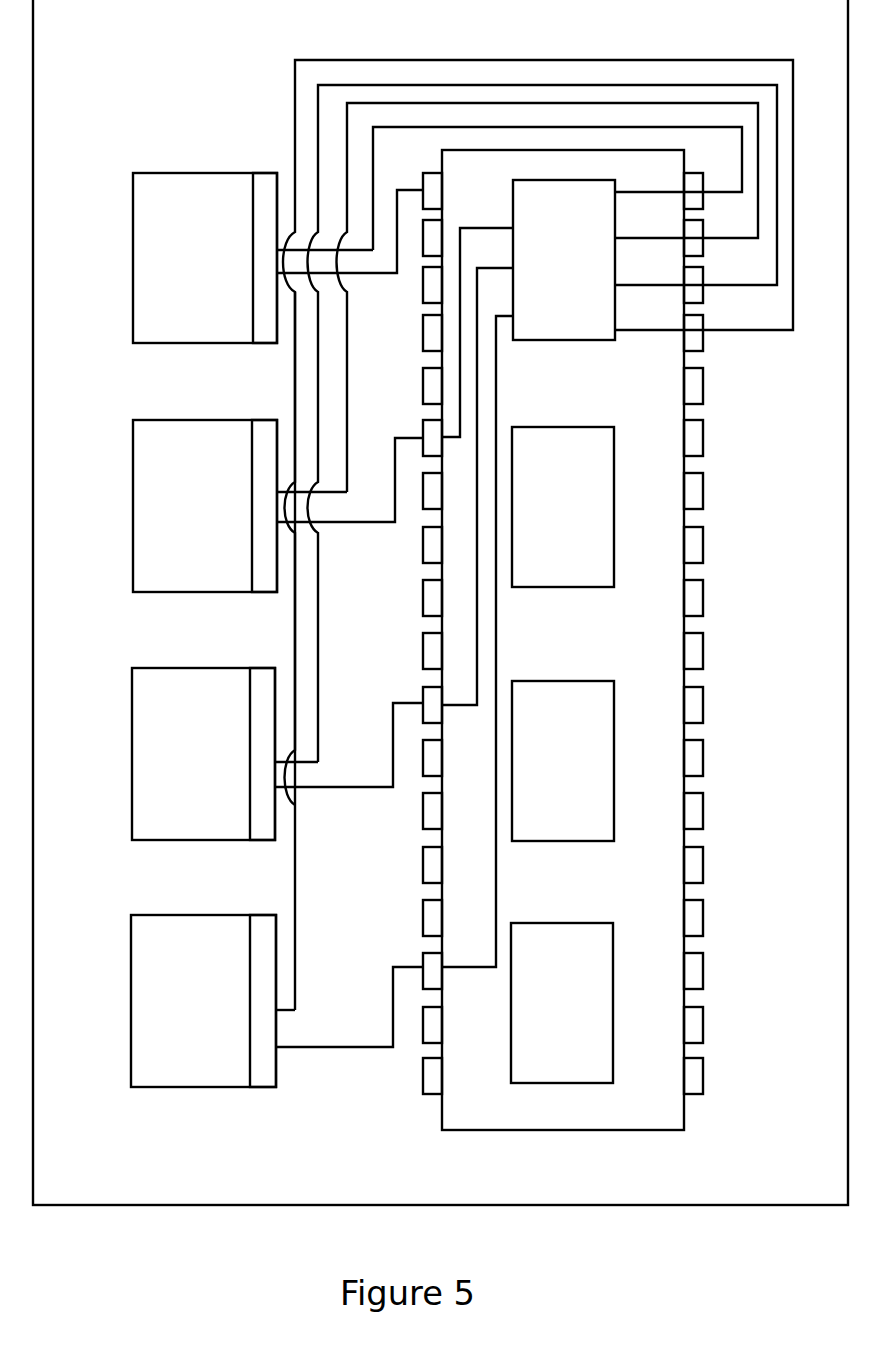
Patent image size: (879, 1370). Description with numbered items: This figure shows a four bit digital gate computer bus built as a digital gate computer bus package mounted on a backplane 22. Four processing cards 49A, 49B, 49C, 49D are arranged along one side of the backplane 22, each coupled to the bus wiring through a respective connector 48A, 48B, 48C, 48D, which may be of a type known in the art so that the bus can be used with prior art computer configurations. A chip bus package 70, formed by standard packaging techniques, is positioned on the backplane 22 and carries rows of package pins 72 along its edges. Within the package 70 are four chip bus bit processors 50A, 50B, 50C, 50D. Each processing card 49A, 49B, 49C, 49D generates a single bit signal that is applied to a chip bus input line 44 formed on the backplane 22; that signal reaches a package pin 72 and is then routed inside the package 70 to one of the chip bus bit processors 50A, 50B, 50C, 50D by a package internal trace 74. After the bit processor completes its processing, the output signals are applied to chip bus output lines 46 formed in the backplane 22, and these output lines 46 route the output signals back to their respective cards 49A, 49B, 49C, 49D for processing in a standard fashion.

The backplane 22 is at (97, 51).
The chip bus input line 44 is at (374, 220).
The chip bus output lines 46 is at (720, 91).
The connector 48A is at (265, 343).
The connector 48B is at (262, 592).
The connector 48C is at (262, 840).
The connector 48D is at (262, 1087).
The processing card 49A is at (133, 230).
The processing card 49B is at (133, 478).
The processing card 49C is at (132, 727).
The processing card 49D is at (131, 975).
The chip bus bit processor 50A is at (564, 260).
The chip bus bit processor 50B is at (563, 507).
The chip bus bit processor 50C is at (563, 761).
The chip bus bit processor 50D is at (562, 1003).
The chip bus package 70 is at (650, 447).
The package pins 72 is at (703, 506).
The package internal trace 74 is at (461, 226).